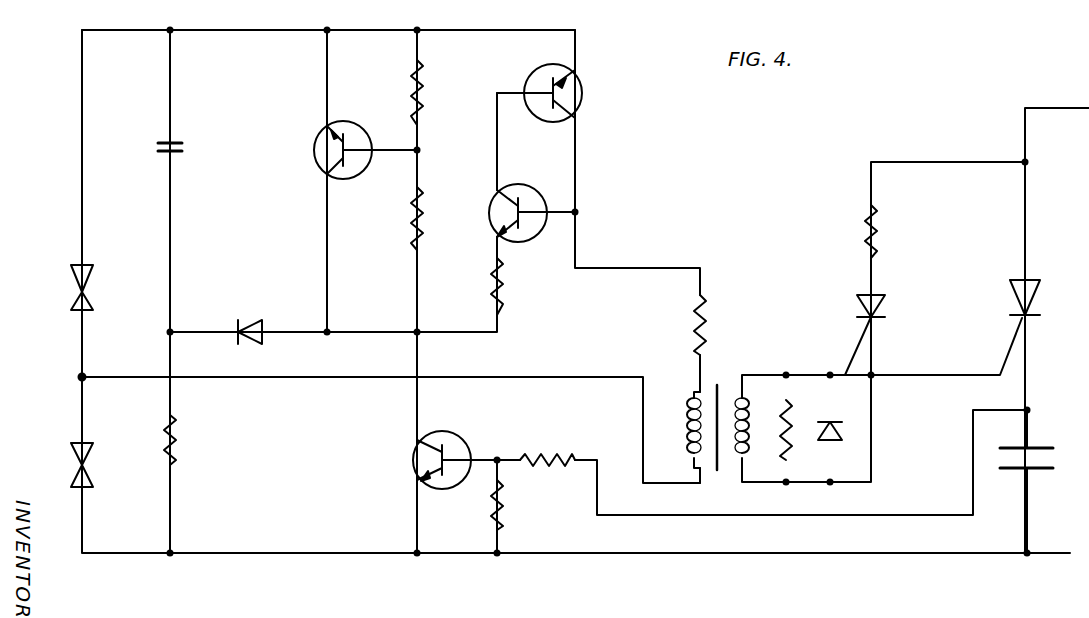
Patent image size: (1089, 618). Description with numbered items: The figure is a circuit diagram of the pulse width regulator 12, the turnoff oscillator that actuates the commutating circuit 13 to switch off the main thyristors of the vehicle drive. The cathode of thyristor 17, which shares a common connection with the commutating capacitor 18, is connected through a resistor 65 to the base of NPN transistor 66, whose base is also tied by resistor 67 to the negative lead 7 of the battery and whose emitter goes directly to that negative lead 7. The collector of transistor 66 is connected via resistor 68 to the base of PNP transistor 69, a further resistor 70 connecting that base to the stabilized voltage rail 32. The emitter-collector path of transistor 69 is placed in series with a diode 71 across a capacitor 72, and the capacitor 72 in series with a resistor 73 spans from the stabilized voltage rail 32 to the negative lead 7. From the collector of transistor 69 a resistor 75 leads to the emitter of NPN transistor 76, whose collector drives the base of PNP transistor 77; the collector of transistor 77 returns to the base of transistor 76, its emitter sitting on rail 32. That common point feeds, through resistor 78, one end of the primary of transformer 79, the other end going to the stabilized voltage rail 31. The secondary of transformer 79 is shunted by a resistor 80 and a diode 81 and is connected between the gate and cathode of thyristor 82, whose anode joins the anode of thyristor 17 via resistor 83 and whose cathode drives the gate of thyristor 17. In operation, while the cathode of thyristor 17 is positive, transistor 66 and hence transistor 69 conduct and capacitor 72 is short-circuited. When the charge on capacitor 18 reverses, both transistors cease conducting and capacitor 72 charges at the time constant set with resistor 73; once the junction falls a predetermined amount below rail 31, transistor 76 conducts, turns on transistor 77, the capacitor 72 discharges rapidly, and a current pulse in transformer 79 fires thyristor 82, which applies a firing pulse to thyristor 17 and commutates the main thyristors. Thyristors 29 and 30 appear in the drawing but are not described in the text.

The negative lead 7 is at (1041, 548).
The pulse width regulator 12 is at (622, 157).
The commutating circuit 13 is at (1033, 372).
The thyristor 17 is at (1019, 297).
The commutating capacitor 18 is at (1008, 470).
The controlled rectifier 29 is at (90, 470).
The controlled rectifier 30 is at (88, 292).
The stabilized voltage rail 31 is at (120, 377).
The stabilized voltage rail 32 is at (142, 31).
The resistor 65 is at (544, 456).
The NPN transistor 66 is at (457, 442).
The resistor 67 is at (500, 516).
The resistor 68 is at (421, 222).
The PNP transistor 69 is at (352, 124).
The resistor 70 is at (421, 106).
The diode 71 is at (248, 318).
The capacitor 72 is at (185, 148).
The resistor 73 is at (178, 444).
The resistor 75 is at (500, 292).
The NPN transistor 76 is at (533, 188).
The PNP transistor 77 is at (546, 70).
The resistor 78 is at (703, 328).
The transformer 79 is at (712, 472).
The resistor 80 is at (784, 432).
The diode 81 is at (836, 432).
The thyristor 82 is at (858, 310).
The resistor 83 is at (866, 216).